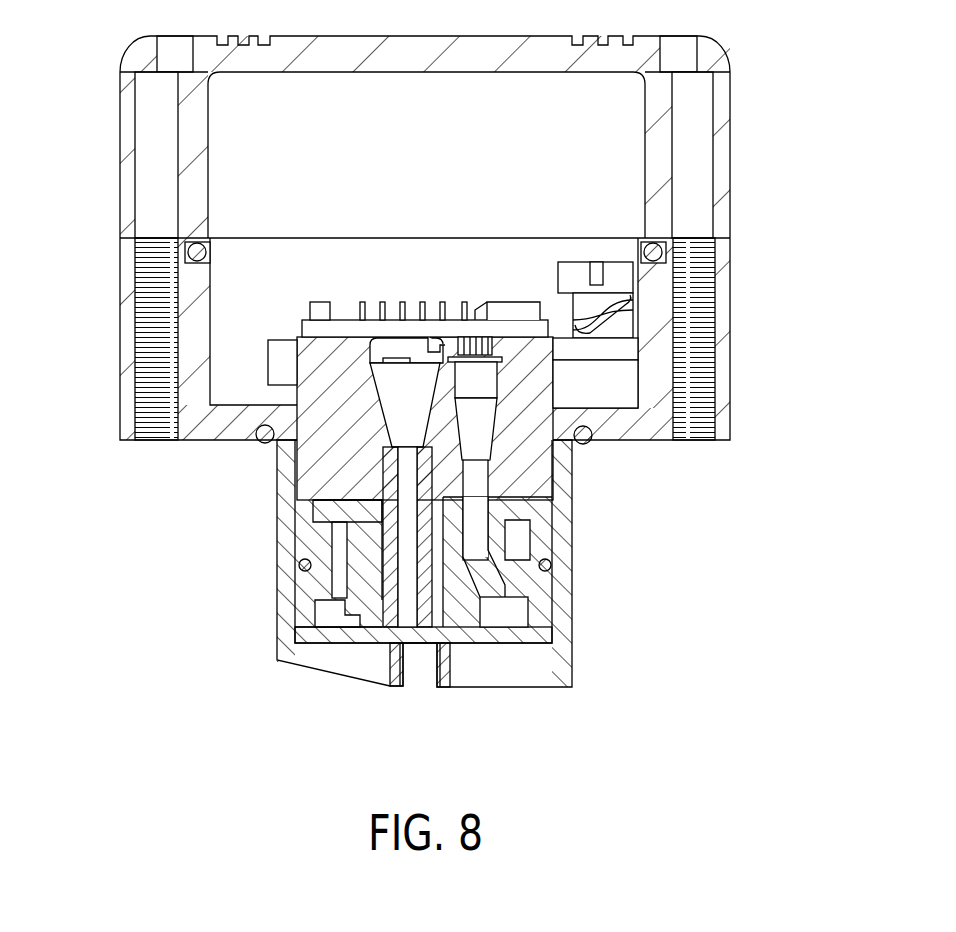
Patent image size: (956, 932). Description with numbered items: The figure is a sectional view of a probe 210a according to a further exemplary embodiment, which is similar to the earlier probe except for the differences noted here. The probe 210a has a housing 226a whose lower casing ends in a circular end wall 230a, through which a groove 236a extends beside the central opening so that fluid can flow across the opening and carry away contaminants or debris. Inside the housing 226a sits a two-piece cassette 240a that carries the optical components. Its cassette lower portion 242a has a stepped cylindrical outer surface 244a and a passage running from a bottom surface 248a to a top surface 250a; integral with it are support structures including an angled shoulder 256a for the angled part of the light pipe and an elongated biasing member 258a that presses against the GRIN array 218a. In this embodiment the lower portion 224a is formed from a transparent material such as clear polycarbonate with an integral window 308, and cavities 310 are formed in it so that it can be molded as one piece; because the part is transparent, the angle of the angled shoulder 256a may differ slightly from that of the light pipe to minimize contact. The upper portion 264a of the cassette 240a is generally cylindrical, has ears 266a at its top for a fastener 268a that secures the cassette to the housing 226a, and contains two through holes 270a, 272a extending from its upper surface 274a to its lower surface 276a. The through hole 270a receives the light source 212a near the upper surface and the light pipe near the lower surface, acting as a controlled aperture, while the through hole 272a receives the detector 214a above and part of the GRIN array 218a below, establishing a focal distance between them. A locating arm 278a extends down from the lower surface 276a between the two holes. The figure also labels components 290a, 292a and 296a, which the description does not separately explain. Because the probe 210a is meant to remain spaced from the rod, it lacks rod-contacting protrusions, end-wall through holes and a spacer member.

The probe 210a is at (770, 122).
The light source 212a is at (489, 374).
The detector 214a is at (428, 343).
The GRIN array 218a is at (307, 648).
The lower portion 224a is at (197, 448).
The housing 226a is at (114, 87).
The end wall 230a is at (517, 694).
The groove 236a is at (421, 688).
The cassette 240a is at (300, 588).
The cassette lower portion 242a is at (553, 613).
The stepped cylindrical outer surface 244a is at (334, 540).
The bottom surface 248a is at (365, 640).
The top surface 250a is at (384, 486).
The angled shoulder 256a is at (540, 508).
The elongated biasing member 258a is at (350, 533).
The upper portion 264a is at (313, 372).
The ears 266a is at (612, 347).
The fastener 268a is at (577, 276).
The through hole 270a is at (486, 417).
The through hole 272a is at (390, 397).
The upper surface 274a is at (362, 347).
The lower surface 276a is at (320, 520).
The locating arm 278a is at (478, 548).
The second seal 290a is at (540, 573).
The circuit board 292a is at (373, 328).
The spring 296a is at (633, 316).
The integral window 308 is at (418, 652).
The cavities 310 is at (318, 630).